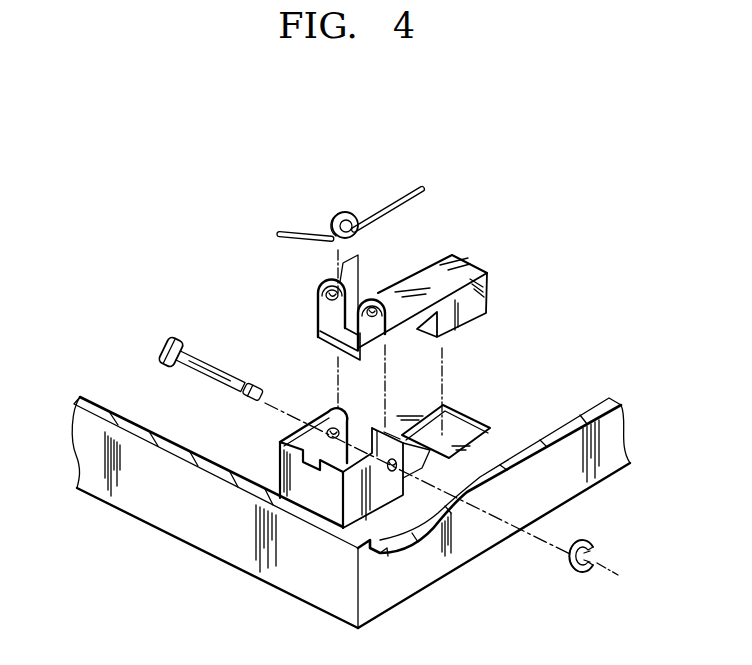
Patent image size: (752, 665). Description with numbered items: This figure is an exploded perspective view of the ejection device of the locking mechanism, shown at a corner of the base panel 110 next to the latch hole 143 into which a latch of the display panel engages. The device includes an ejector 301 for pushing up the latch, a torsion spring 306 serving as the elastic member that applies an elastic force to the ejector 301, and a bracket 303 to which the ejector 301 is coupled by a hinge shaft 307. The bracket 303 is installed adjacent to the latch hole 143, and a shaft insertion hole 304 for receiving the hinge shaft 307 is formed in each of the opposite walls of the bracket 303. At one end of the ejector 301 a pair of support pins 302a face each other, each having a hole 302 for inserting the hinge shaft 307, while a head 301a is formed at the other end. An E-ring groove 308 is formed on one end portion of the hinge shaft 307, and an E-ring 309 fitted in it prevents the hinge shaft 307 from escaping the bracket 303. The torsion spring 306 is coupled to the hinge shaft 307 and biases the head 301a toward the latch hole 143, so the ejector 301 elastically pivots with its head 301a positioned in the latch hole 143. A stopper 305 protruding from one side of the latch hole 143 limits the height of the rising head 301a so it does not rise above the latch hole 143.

The base panel 110 is at (215, 538).
The latch hole 143 is at (457, 427).
The ejector 301 is at (490, 271).
The head 301a is at (472, 296).
The hole 302 is at (339, 292).
The support pin 302a is at (358, 256).
The bracket 303 is at (390, 469).
The shaft insertion hole 304 is at (372, 430).
The stopper 305 is at (336, 410).
The torsion spring 306 is at (398, 183).
The hinge shaft 307 is at (158, 352).
The E-ring groove 308 is at (246, 382).
The E-ring 309 is at (597, 558).